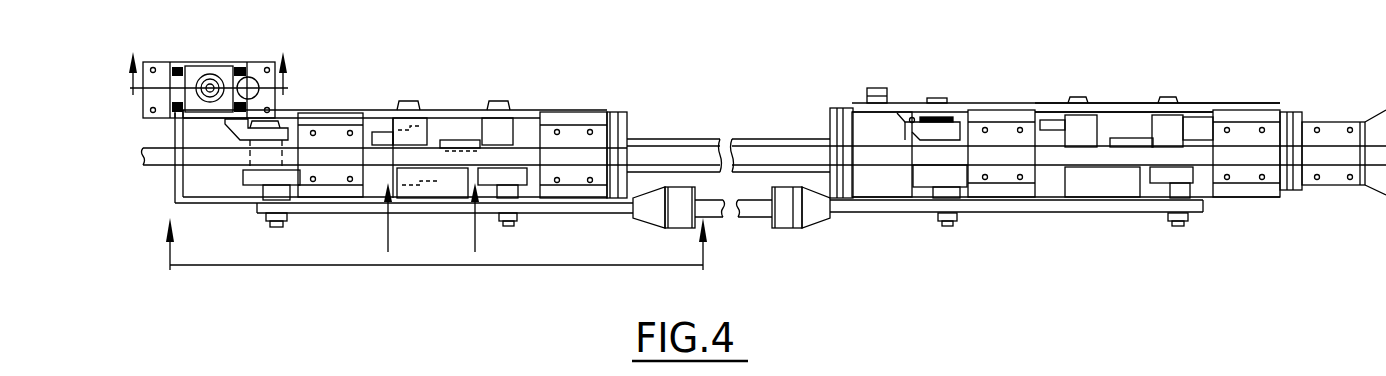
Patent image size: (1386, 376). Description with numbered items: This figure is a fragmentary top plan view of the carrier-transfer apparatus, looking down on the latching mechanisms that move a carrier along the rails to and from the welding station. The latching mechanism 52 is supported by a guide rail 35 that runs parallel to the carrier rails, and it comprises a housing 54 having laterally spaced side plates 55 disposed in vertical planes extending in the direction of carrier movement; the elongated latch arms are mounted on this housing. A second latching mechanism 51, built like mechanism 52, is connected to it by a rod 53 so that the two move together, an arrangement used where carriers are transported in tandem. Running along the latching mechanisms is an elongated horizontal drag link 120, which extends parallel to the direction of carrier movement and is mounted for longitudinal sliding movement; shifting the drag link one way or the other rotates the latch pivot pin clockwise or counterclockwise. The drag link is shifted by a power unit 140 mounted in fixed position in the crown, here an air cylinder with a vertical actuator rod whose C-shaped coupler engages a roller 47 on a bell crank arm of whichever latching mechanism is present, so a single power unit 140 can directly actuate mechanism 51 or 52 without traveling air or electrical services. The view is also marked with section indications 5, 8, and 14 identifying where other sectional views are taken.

The power unit 140 is at (217, 62).
The section line 8- 8 is at (210, 73).
The second latching mechanism 51 is at (446, 108).
The guide rail 35 is at (662, 148).
The section line 14- 14 is at (433, 221).
The section line 5- 5 is at (432, 244).
The rod 53 is at (780, 139).
The latching mechanism 52 is at (1144, 108).
The housing 54 is at (958, 110).
The stop 47 is at (880, 88).
The drag link 120 is at (902, 214).
The side plates 55 is at (1050, 108).